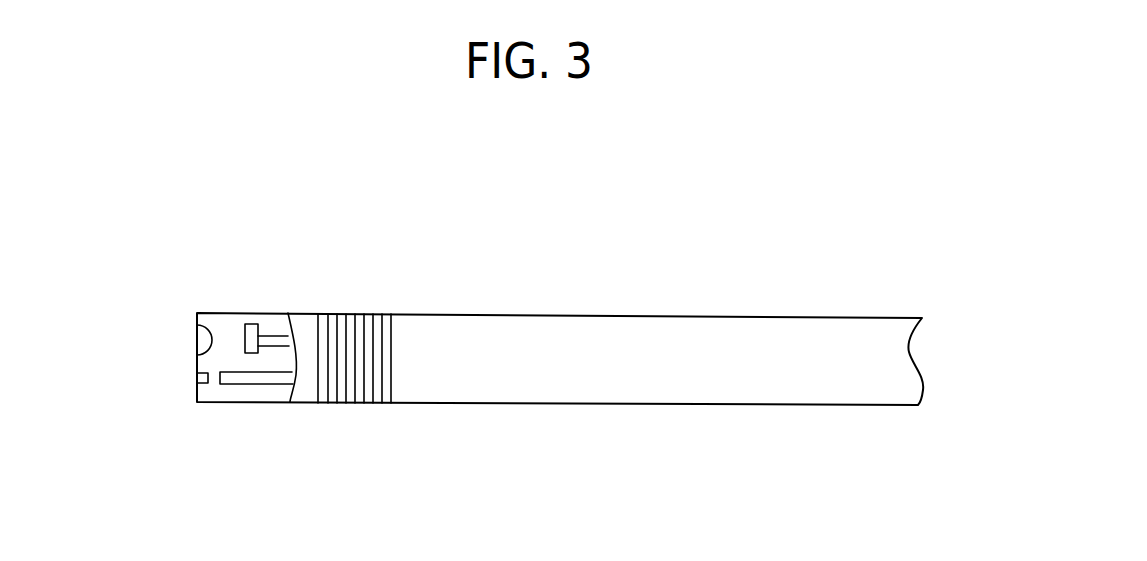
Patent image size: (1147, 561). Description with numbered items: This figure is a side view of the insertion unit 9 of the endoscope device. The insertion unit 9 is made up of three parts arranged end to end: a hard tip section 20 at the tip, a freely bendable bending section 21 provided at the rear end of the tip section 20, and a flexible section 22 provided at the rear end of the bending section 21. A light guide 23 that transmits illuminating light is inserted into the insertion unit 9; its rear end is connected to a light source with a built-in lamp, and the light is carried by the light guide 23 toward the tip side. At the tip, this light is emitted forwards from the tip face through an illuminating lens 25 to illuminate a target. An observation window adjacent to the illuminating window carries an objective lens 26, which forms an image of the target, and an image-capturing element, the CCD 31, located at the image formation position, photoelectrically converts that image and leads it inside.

The insertion unit 9 is at (540, 285).
The tip section 20 is at (217, 403).
The bending section 21 is at (353, 403).
The flexible section 22 is at (592, 392).
The light guide 23 is at (263, 378).
The illuminating lens 25 is at (197, 377).
The objective lens 26 is at (202, 339).
The CCD 31 is at (251, 330).